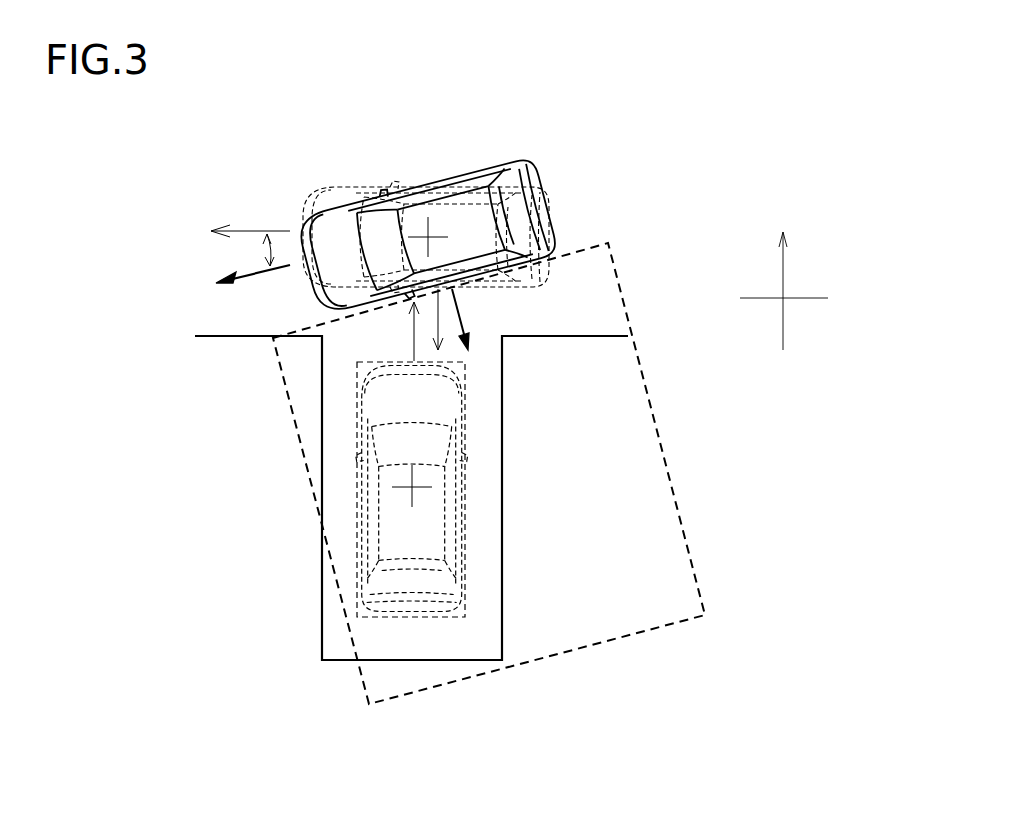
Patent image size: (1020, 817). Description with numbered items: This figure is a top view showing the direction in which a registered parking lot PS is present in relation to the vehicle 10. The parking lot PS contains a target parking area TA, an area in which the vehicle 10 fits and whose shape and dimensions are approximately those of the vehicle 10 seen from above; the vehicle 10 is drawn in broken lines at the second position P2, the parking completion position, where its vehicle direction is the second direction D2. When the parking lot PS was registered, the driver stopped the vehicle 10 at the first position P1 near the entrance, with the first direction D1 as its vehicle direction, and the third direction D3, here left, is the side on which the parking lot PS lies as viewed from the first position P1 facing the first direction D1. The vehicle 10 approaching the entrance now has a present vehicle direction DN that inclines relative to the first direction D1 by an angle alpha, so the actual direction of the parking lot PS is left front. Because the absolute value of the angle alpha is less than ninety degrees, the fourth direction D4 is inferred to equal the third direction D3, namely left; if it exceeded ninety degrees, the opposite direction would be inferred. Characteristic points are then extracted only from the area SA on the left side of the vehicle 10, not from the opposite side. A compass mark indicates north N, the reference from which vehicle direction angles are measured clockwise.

The vehicle 10 is at (343, 187).
The first position P1 is at (420, 228).
The second position P2 is at (410, 487).
The first direction D1 is at (239, 235).
The vehicle direction DN is at (243, 288).
The angle alpha is at (255, 251).
The second direction D2 is at (404, 333).
The third direction D3 is at (433, 319).
The fourth direction D4 is at (475, 319).
The area SA is at (617, 273).
The parking lot PS is at (480, 470).
The target parking area TA is at (465, 517).
The north N is at (784, 274).